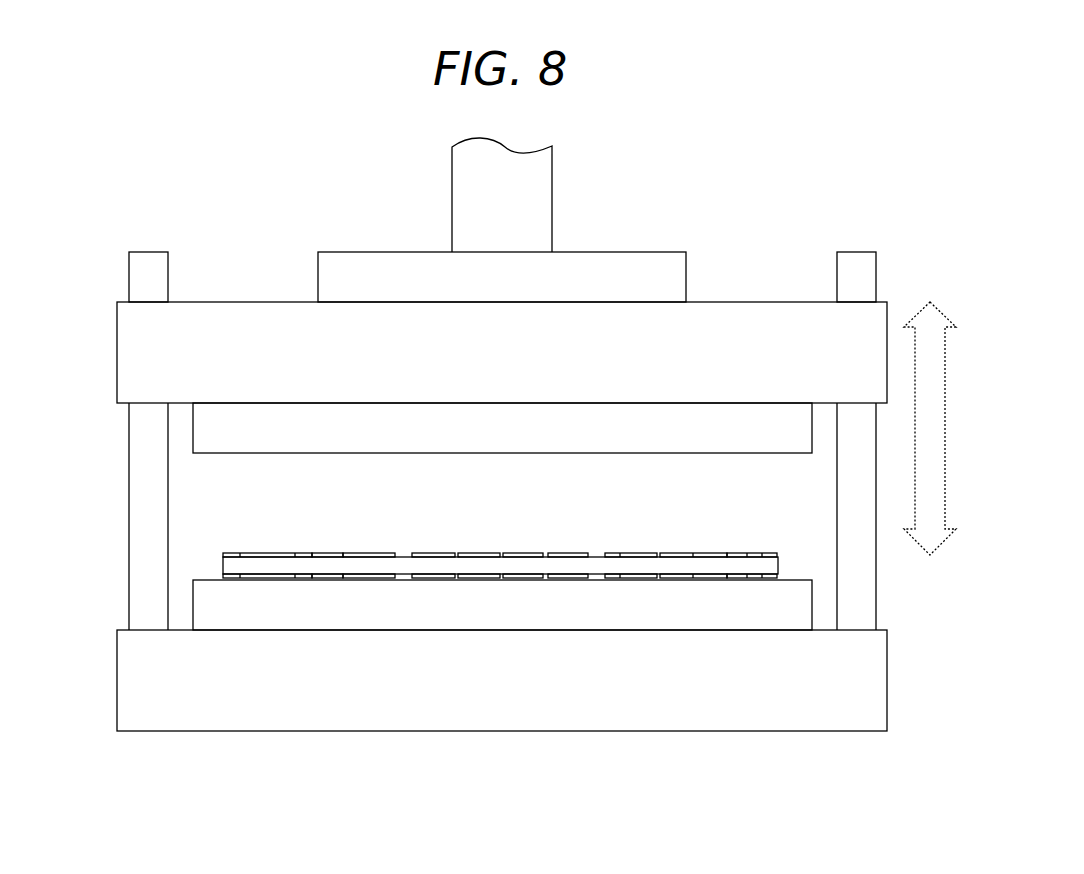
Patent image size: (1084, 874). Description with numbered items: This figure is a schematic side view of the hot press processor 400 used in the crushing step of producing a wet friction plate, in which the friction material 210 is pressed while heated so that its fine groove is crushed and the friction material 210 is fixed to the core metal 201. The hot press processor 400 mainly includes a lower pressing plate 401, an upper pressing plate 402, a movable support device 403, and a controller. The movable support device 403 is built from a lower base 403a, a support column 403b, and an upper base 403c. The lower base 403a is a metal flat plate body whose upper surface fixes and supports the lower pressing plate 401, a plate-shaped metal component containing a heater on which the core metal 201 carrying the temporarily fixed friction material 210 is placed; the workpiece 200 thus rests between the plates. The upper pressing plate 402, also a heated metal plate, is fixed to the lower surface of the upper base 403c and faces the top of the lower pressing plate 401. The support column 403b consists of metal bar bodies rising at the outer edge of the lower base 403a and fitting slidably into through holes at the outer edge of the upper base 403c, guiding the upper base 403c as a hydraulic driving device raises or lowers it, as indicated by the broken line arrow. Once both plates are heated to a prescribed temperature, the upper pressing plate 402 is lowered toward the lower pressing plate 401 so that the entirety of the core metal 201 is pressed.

The hot press processor 400 is at (152, 135).
The movable support device 403 is at (688, 250).
The upper base 403c is at (257, 302).
The support column 403b is at (129, 277).
The upper pressing plate 402 is at (193, 428).
The lower pressing plate 401 is at (193, 604).
The lower base 403a is at (171, 731).
The laminated workpiece 200 is at (500, 527).
The core metal 201 is at (405, 557).
The friction material 210 is at (440, 504).